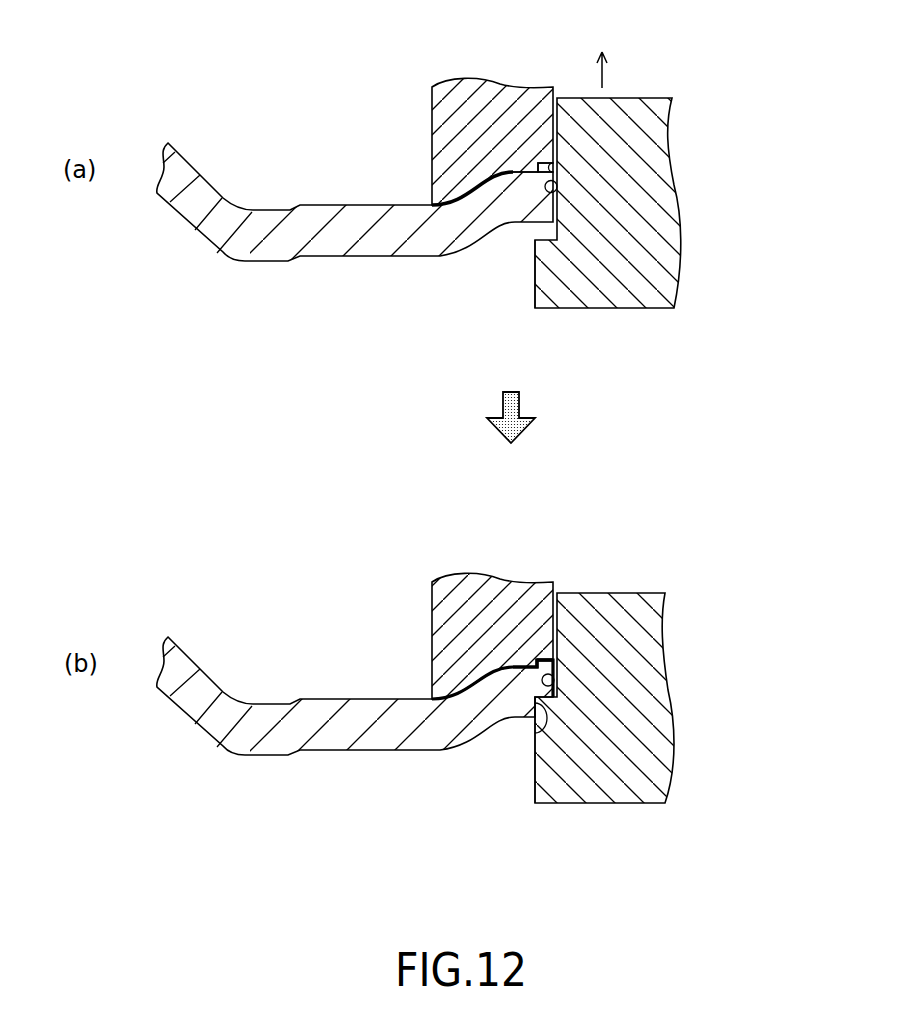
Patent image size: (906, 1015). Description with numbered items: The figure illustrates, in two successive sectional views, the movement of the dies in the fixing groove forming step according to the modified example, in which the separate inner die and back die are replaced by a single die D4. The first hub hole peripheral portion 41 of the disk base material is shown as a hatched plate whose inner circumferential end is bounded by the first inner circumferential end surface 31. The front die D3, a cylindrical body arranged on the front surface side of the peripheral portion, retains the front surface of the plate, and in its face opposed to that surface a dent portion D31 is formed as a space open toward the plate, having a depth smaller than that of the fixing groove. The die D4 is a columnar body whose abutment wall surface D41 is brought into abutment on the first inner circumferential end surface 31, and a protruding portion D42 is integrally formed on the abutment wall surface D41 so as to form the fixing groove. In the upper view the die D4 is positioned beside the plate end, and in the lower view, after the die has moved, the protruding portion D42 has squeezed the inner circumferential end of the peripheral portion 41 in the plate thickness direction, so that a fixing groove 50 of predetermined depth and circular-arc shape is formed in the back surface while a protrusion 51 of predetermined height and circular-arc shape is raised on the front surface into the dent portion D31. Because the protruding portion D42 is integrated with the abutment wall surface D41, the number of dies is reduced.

The first hub hole peripheral portion 41 is at (360, 205).
The first inner circumferential end surface 31 is at (560, 208).
The front die D3 is at (472, 82).
The dent portion D31 is at (555, 167).
The die D4 is at (638, 98).
The abutment wall surface D41 is at (557, 197).
The protruding portion D42 is at (535, 273).
The protrusion 51 is at (546, 658).
The fixing groove 50 is at (535, 740).